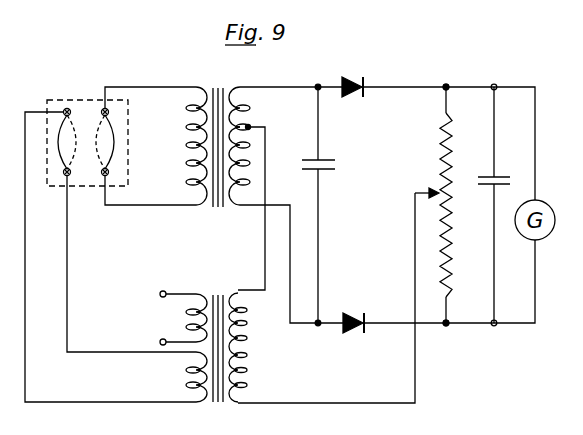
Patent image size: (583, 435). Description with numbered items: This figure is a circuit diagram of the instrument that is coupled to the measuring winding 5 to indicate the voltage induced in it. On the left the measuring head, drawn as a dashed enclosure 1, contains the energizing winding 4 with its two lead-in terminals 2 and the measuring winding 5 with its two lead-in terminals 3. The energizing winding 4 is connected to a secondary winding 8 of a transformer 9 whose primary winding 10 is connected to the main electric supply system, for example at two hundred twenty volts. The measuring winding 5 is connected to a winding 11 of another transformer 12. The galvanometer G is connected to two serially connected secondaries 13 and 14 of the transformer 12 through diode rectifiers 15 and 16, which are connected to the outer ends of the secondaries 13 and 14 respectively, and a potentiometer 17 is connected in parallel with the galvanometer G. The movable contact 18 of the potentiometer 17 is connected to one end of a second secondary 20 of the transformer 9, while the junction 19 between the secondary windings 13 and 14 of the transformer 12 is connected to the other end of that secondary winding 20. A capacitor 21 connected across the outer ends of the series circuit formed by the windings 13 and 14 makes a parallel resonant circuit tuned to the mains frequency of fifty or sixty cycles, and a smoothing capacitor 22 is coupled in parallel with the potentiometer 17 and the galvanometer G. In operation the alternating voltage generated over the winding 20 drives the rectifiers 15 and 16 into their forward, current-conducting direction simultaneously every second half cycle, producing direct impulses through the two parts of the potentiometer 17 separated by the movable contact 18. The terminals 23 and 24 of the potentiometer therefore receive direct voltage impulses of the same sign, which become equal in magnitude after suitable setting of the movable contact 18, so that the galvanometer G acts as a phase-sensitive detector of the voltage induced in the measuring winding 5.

The discharge lamp 1 is at (90, 186).
The lead-in terminals of electrode 4 2 is at (67, 108).
The lead-in terminals of electrode 5 3 is at (108, 112).
The energizing winding 4 is at (58, 140).
The measuring winding 5 is at (114, 140).
The secondary winding 8 is at (188, 385).
The transformer 9 is at (208, 425).
The primary winding 10 is at (191, 311).
The winding 11 is at (187, 182).
The transformer 12 is at (227, 81).
The secondary winding 13 is at (250, 108).
The secondary winding 14 is at (250, 166).
The rectifier 15 is at (357, 97).
The rectifier 16 is at (357, 333).
The potentiometer 17 is at (441, 147).
The movable contact 18 is at (436, 188).
The junction 19 is at (250, 125).
The second secondary winding 20 is at (247, 357).
The capacitor 21 is at (323, 160).
The smoothing capacitor 22 is at (500, 176).
The terminal 23 is at (447, 85).
The terminal 24 is at (446, 326).